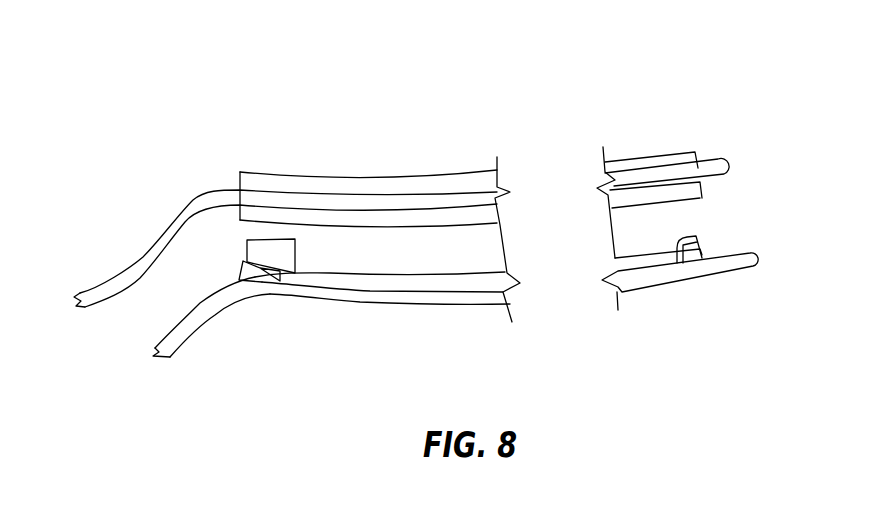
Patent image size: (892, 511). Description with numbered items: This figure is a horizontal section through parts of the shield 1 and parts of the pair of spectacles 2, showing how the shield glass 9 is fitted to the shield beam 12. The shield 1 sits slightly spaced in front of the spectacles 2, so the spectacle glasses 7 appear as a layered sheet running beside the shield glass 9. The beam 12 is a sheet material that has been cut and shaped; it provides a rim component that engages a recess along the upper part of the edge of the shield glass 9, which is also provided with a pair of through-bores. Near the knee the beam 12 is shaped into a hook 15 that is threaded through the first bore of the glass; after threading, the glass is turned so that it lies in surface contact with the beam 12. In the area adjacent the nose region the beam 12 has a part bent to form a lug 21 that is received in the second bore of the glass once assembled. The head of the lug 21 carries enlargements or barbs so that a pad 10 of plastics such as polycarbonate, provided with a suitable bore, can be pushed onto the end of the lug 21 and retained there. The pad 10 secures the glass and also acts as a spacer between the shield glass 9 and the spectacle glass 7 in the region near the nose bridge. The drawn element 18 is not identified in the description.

The shield 1 is at (490, 339).
The pair of spectacles 2 is at (126, 202).
The spectacle glasses 7 is at (258, 172).
The shield glass 9 is at (392, 283).
The pad 10 is at (288, 253).
The shield beam 12 is at (708, 277).
The hook 15 is at (690, 238).
The upper rod 18 is at (716, 160).
The lug 21 is at (262, 278).